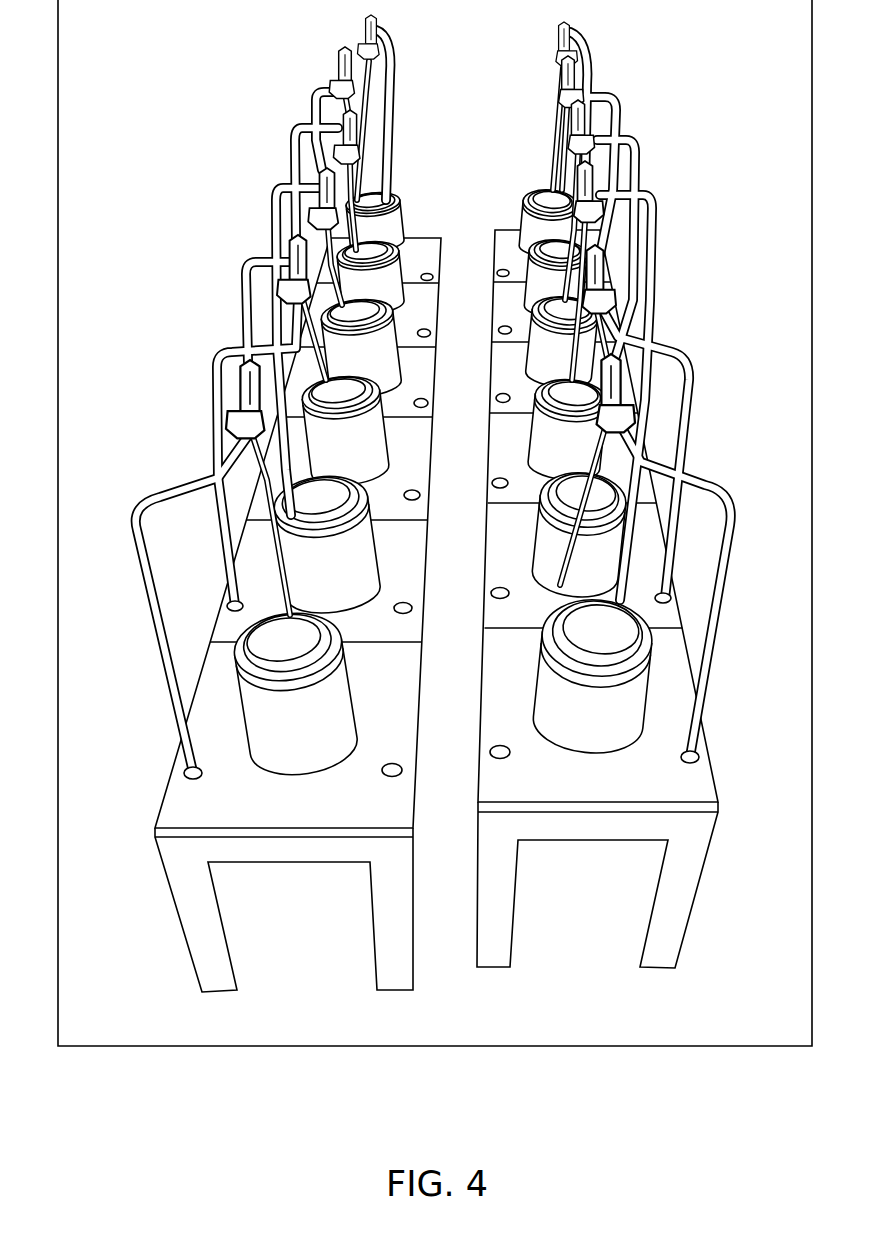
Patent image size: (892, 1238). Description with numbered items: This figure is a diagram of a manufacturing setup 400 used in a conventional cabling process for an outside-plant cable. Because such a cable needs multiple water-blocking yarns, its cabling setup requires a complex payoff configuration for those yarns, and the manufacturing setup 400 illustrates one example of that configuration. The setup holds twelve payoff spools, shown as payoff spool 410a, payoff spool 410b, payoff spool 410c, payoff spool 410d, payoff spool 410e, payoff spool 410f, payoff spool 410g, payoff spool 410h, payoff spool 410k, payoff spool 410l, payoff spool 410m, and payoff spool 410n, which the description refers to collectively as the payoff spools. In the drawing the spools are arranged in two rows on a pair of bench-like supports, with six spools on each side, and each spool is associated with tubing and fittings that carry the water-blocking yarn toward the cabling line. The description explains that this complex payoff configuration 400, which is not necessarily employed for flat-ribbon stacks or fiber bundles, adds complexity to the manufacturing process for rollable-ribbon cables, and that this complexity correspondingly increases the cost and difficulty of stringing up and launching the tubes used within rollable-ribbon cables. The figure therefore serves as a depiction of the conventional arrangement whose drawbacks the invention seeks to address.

The manufacturing setup 400 is at (272, 1080).
The payoff spool 410a is at (430, 213).
The payoff spool 410b is at (526, 222).
The payoff spool 410c is at (398, 279).
The payoff spool 410d is at (534, 292).
The payoff spool 410e is at (360, 348).
The payoff spool 410f is at (561, 342).
The payoff spool 410g is at (345, 430).
The payoff spool 410h is at (568, 429).
The payoff spool 410k is at (327, 545).
The payoff spool 410l is at (579, 535).
The payoff spool 410m is at (296, 694).
The payoff spool 410n is at (592, 676).